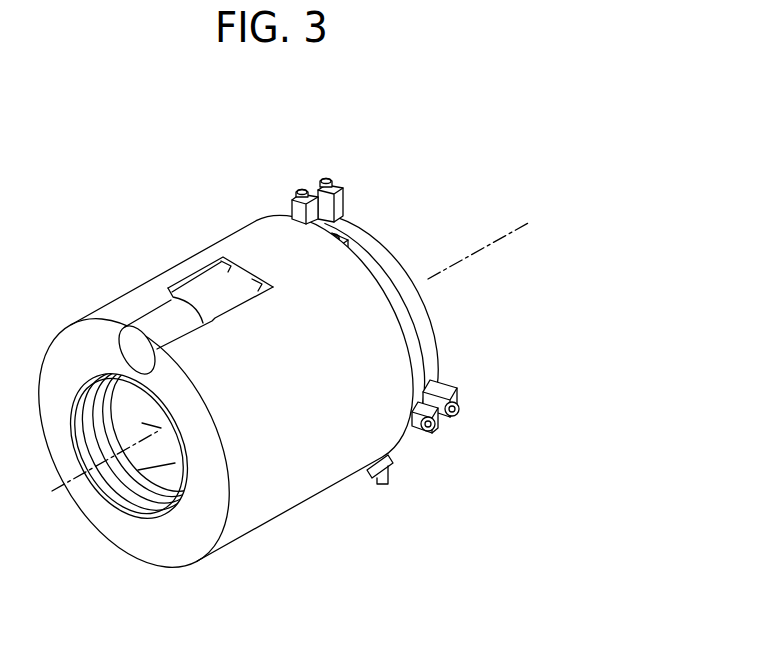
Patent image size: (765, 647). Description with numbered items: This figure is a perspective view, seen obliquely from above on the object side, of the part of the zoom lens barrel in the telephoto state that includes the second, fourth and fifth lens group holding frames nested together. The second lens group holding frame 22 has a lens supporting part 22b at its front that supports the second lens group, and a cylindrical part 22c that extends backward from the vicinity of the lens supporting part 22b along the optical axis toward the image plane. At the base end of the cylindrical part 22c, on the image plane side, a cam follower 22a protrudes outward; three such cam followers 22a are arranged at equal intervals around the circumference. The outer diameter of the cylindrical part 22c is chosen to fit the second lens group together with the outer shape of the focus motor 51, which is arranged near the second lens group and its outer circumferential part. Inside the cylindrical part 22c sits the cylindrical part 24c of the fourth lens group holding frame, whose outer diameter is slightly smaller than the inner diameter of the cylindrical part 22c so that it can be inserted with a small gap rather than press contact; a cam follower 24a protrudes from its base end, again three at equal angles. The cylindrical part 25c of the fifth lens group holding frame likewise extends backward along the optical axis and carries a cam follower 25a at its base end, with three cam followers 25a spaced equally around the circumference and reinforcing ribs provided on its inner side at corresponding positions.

The second lens group holding frame 22 is at (100, 537).
The cam follower 22a is at (387, 483).
The lens supporting part 22b is at (142, 425).
The cylindrical part 22c is at (308, 480).
The cam follower 24a is at (300, 194).
The cylindrical part 24c is at (430, 344).
The cam follower 25a is at (327, 178).
The cylindrical part 25c is at (378, 247).
The focus motor 51 is at (153, 325).